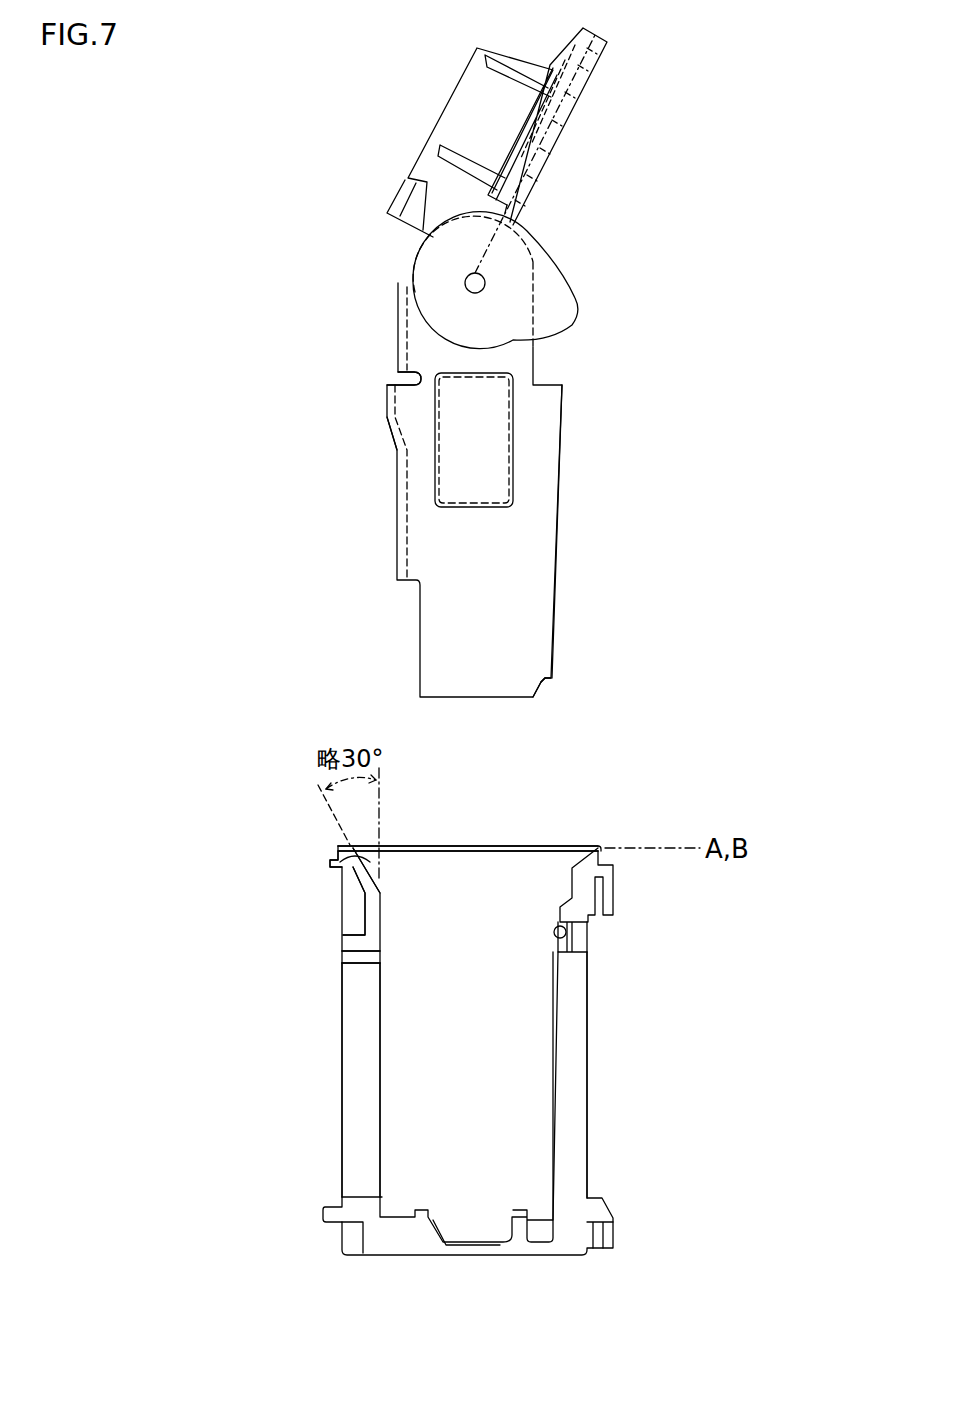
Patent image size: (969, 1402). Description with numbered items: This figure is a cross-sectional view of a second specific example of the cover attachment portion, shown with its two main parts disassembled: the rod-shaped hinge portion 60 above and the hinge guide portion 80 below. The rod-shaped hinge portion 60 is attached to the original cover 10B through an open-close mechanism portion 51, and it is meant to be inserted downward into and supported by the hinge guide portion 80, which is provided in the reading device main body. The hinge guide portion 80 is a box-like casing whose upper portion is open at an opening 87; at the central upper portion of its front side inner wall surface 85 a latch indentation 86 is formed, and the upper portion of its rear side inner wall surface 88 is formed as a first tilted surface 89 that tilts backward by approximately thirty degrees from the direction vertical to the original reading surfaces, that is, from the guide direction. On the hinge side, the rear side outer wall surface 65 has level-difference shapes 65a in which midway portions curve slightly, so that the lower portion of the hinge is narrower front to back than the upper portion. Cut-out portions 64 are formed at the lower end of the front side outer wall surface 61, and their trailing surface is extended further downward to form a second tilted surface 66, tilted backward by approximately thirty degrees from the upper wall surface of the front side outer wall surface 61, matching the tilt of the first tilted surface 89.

The original cover 10B is at (560, 115).
The open-close mechanism portion 51 is at (575, 300).
The rod-shaped hinge portion 60 is at (533, 548).
The front side outer wall surface 61 is at (553, 593).
The cut-out portions 64 is at (544, 682).
The rear side outer wall surface 65 is at (387, 402).
The level-difference shapes 65a is at (392, 437).
The second tilted surface 66 is at (543, 700).
The hinge guide portion 80 is at (467, 1014).
The front side inner wall surface 85 is at (549, 1046).
The latch indentation 86 is at (590, 940).
The opening 87 is at (468, 846).
The rear side inner wall surface 88 is at (386, 1052).
The first tilted surface 89 is at (350, 858).